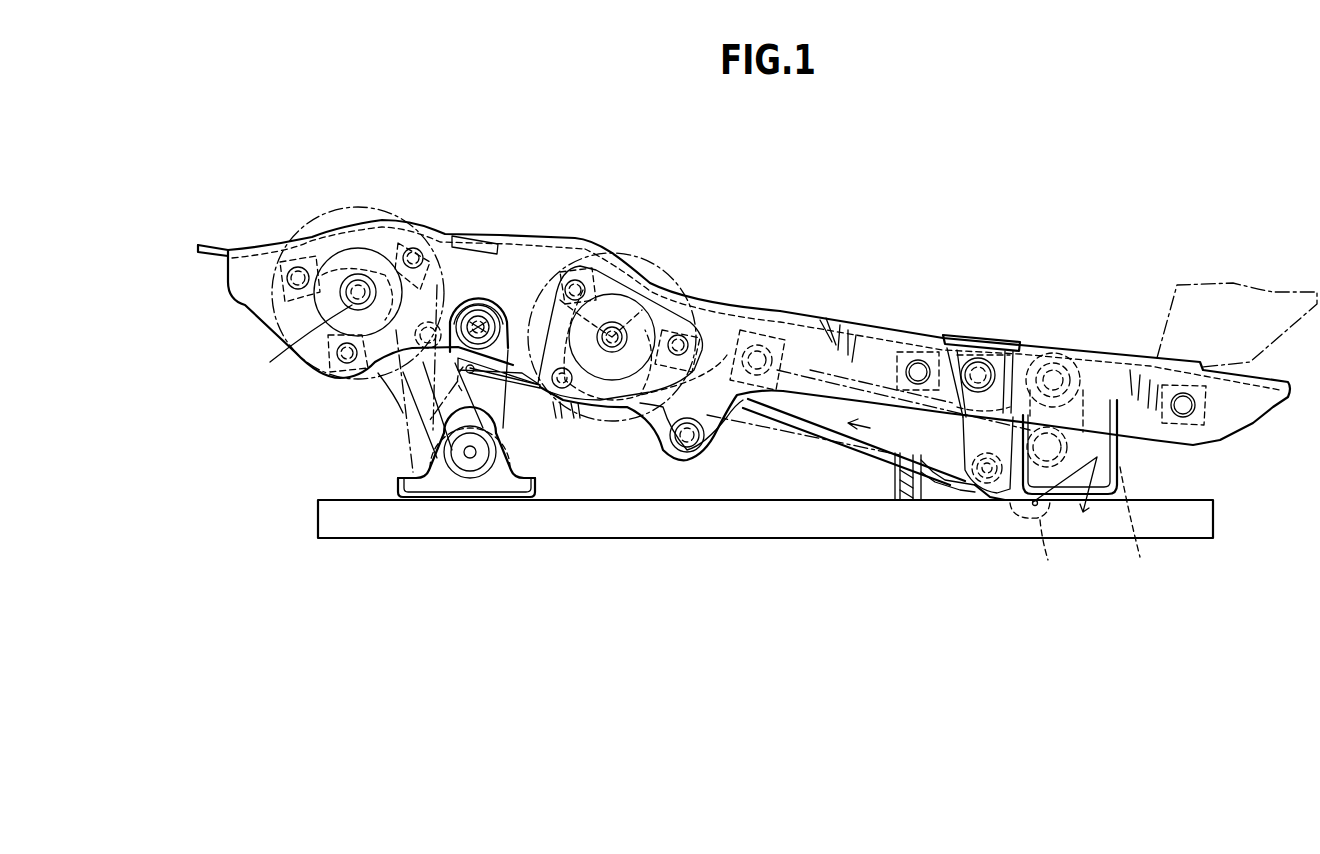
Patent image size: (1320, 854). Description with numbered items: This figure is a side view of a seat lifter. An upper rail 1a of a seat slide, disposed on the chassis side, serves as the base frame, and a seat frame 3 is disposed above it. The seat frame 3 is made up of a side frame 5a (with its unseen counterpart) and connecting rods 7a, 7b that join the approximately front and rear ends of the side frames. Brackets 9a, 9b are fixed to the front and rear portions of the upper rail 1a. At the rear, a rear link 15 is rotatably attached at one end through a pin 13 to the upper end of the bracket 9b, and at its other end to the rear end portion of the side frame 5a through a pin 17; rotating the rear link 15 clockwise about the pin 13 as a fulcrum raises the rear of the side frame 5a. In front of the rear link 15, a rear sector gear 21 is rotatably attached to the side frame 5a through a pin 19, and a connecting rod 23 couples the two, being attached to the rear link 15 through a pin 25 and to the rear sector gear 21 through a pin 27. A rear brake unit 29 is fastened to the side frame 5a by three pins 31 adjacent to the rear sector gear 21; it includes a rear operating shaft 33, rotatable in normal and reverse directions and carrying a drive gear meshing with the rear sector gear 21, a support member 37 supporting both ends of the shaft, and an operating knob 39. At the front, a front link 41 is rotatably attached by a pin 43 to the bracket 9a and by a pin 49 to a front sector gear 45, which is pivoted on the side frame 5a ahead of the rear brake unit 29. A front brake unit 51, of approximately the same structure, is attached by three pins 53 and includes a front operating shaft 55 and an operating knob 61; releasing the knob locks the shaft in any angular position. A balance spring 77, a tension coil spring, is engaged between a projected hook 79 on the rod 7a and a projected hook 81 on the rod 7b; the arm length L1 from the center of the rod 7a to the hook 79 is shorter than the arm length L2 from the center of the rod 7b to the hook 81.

The upper rail 1a is at (830, 540).
The seat frame 3 is at (905, 315).
The side frame 5a is at (845, 330).
The connecting rod 7a is at (492, 420).
The connecting rod 7b is at (1094, 504).
The bracket 9a is at (440, 482).
The bracket 9b is at (1118, 440).
The pin 13 is at (1057, 362).
The rear link 15 is at (945, 500).
The pin 17 is at (980, 355).
The pin 19 is at (700, 450).
The rear sector gear 21 is at (637, 400).
The connecting rod 23 is at (850, 430).
The pin 25 is at (987, 500).
The pin 27 is at (745, 330).
The rear brake unit 29 is at (645, 300).
The pin 31 is at (585, 280).
The rear operating shaft 33 is at (540, 300).
The support member 37 is at (575, 285).
The operating knob 39 is at (632, 265).
The front link 41 is at (414, 402).
The pin 43 is at (475, 458).
The front sector gear 45 is at (478, 304).
The pin 49 is at (448, 230).
The front brake unit 51 is at (357, 274).
The pin 53 is at (411, 248).
The front operating shaft 55 is at (304, 342).
The operating knob 61 is at (312, 230).
The balance spring 77 is at (895, 502).
The projected hook 79 is at (502, 296).
The projected hook 81 is at (1038, 541).
The arm length L1 is at (497, 391).
The arm length L2 is at (1092, 520).